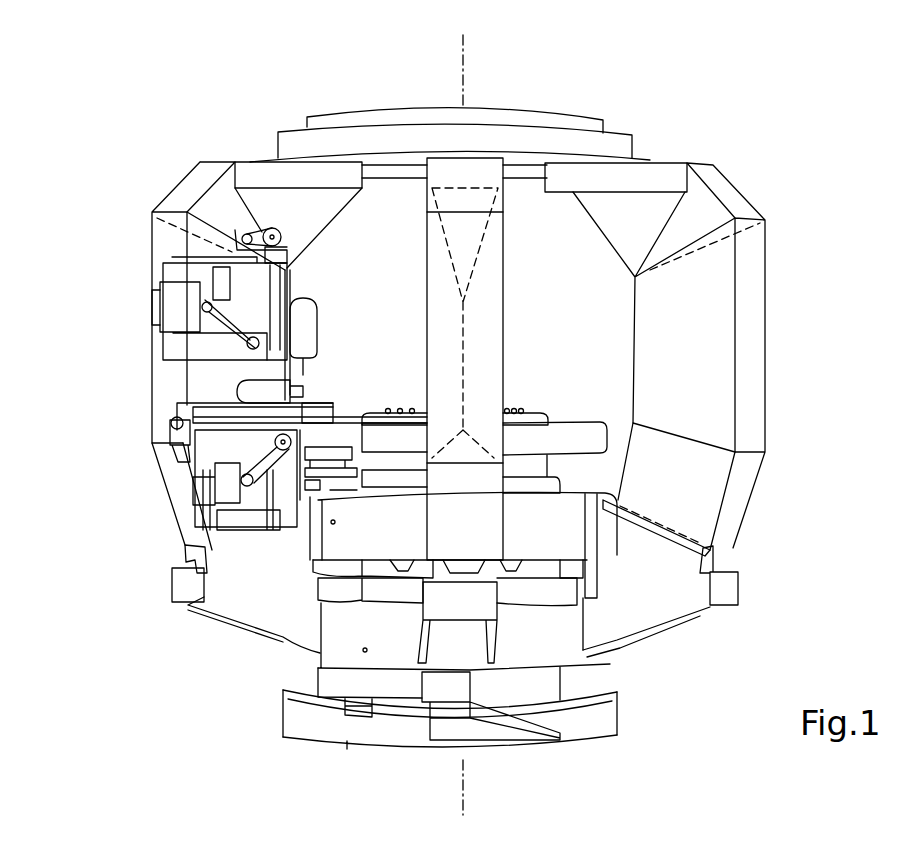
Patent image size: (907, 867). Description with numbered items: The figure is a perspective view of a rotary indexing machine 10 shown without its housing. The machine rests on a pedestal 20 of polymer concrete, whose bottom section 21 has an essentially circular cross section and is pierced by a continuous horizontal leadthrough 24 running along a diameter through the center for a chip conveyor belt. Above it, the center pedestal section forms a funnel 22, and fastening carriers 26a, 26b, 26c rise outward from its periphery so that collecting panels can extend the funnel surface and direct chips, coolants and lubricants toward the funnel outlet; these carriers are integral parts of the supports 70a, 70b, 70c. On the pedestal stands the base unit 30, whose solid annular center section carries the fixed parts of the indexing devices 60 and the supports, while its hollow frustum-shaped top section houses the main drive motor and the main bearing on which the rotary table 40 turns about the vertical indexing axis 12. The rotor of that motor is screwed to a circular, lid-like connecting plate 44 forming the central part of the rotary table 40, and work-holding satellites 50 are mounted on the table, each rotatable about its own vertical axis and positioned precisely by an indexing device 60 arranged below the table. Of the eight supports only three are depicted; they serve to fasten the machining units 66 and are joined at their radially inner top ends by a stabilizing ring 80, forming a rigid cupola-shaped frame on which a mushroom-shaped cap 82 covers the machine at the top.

The rotary indexing machine 10 is at (754, 131).
The indexing axis 12 is at (468, 68).
The pedestal 20 is at (570, 675).
The bottom section 21 is at (337, 675).
The funnel 22 is at (333, 628).
The leadthrough 24 is at (453, 690).
The fastening carrier 26a is at (728, 600).
The fastening carrier 26b is at (450, 608).
The fastening carrier 26c is at (180, 590).
The base unit 30 is at (558, 535).
The rotary table 40 is at (590, 437).
The connecting plate 44 is at (535, 412).
The satellite 50 is at (317, 398).
The indexing device 60 is at (345, 444).
The machining unit 66 is at (215, 480).
The support 70a is at (752, 300).
The support 70b is at (488, 300).
The support 70c is at (165, 292).
The stabilizing ring 80 is at (375, 157).
The cap 82 is at (403, 128).